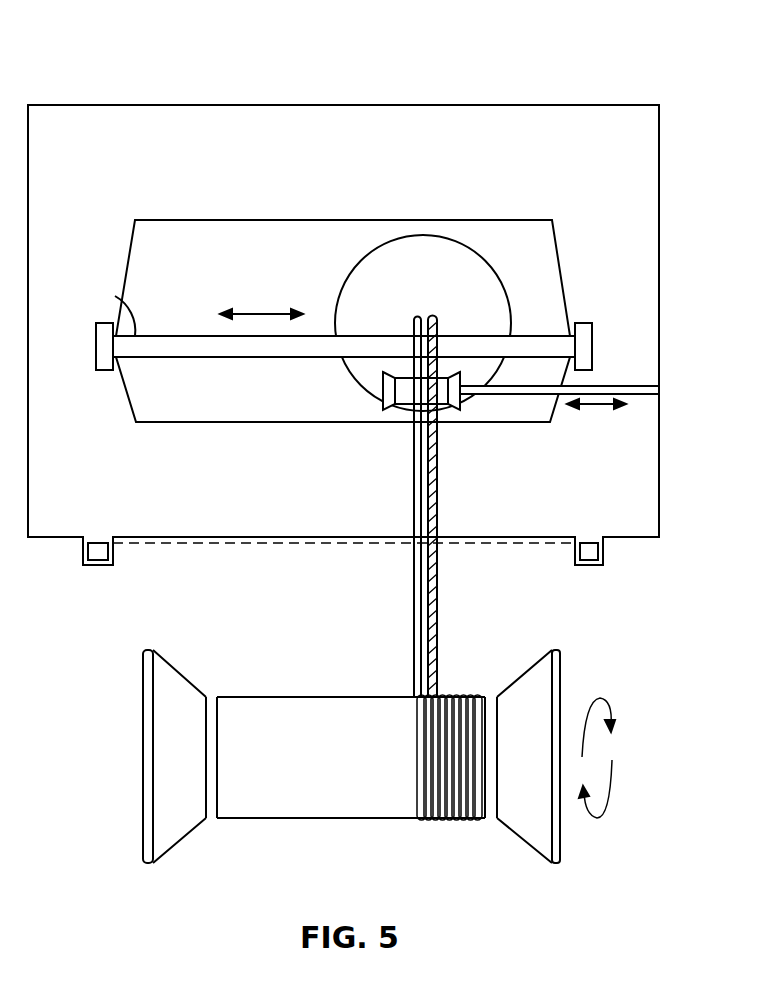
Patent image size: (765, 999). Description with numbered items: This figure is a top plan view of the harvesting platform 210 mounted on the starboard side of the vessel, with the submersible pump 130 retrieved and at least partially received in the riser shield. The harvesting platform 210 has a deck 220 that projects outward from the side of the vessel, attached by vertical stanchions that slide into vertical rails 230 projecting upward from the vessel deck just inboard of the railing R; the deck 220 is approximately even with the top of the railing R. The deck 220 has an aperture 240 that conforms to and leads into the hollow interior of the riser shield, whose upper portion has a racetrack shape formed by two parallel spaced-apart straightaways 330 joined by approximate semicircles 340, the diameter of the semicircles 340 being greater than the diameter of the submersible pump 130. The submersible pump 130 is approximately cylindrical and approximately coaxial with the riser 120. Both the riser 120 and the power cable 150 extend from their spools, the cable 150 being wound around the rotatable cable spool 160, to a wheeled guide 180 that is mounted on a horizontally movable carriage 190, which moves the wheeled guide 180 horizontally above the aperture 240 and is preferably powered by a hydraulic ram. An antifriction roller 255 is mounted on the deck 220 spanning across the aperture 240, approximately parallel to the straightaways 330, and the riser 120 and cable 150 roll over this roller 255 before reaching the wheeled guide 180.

The harvesting platform 210 is at (604, 50).
The deck 220 is at (661, 168).
The vertical rails 230 is at (593, 552).
The aperture 240 is at (402, 186).
The antifriction roller 255 is at (117, 300).
The straightaways 330 is at (263, 222).
The semicircles 340 is at (128, 253).
The submersible pump 130 is at (432, 237).
The wheeled guide 180 is at (383, 395).
The horizontally movable carriage 190 is at (645, 395).
The power cable 150 is at (414, 645).
The riser 120 is at (437, 645).
The cable spool 160 is at (163, 768).
The railing R is at (240, 544).